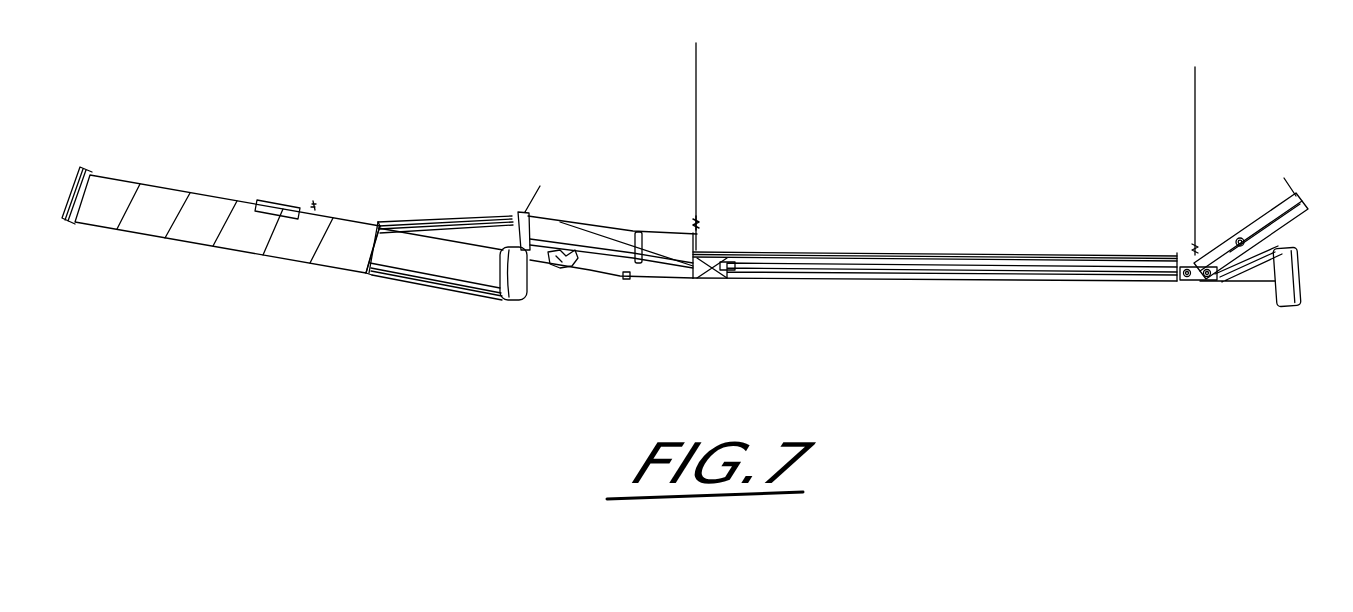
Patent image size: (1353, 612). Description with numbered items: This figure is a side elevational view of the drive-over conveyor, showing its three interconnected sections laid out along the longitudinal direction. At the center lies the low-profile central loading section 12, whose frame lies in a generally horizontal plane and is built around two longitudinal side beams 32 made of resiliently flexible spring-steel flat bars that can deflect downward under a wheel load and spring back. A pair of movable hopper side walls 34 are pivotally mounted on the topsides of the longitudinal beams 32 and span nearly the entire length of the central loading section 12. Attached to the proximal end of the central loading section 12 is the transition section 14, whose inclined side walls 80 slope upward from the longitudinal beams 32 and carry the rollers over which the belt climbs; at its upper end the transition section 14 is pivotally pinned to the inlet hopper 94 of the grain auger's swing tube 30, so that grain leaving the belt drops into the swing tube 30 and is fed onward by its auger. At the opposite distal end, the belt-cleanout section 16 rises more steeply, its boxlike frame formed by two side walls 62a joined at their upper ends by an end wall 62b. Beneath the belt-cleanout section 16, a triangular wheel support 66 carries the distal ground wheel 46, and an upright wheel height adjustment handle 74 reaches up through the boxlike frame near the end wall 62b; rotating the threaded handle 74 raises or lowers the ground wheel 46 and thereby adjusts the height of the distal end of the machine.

The central loading section 12 is at (1058, 225).
The transition section 14 is at (594, 214).
The belt-cleanout section 16 is at (1263, 187).
The swing tube 30 is at (213, 193).
The longitudinal side beams 32 is at (818, 280).
The hopper side walls 34 is at (828, 250).
The distal ground wheel 46 is at (1285, 298).
The side walls 62a is at (1288, 210).
The end wall 62b is at (1292, 202).
The triangular wheel support 66 is at (1247, 288).
The wheel height adjustment handle 74 is at (1288, 173).
The inclined side walls 80 is at (594, 265).
The inlet hopper 94 is at (457, 278).